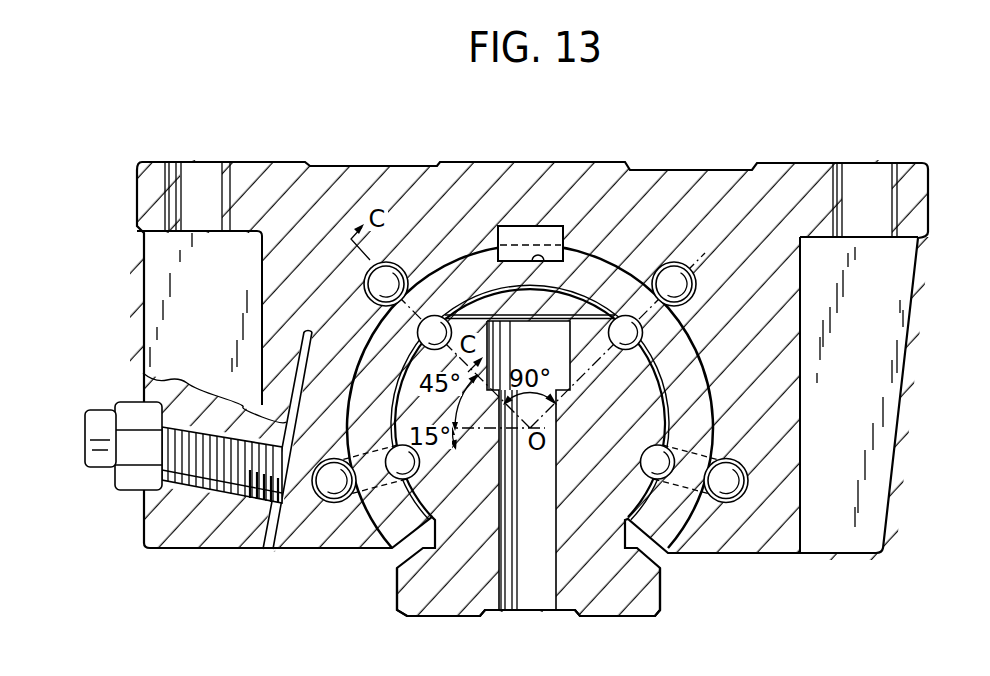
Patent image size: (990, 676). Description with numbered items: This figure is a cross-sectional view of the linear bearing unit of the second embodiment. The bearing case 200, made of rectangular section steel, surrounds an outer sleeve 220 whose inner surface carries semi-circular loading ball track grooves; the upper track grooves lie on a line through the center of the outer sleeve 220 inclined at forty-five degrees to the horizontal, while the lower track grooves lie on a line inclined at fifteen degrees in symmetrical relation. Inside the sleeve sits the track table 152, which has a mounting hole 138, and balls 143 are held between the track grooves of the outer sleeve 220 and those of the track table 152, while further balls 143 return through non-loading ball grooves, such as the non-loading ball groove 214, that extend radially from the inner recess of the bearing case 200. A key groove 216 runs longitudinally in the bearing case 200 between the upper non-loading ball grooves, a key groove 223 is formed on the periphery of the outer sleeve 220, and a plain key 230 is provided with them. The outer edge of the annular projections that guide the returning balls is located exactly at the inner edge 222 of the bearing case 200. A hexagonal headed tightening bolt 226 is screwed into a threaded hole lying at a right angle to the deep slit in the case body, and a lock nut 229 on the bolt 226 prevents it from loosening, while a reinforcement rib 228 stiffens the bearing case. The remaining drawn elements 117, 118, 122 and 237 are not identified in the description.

The bearing case 200 is at (778, 158).
The housing body 122 is at (707, 190).
The clamping bolt 117 is at (181, 163).
The clamping bolt 118 is at (893, 183).
The reinforcement rib 228 is at (150, 293).
The slit 237 is at (312, 328).
The hexagonal headed bolt 226 is at (108, 405).
The lock nut 229 is at (121, 478).
The outer sleeve 220 is at (600, 266).
The inner edge of the bearing case 222 is at (697, 343).
The non-loading ball groove 214 is at (680, 345).
The mounting hole 138 is at (500, 588).
The track table 152 is at (613, 600).
The key groove 216 is at (518, 228).
The plain key 230 is at (553, 227).
The key groove 223 is at (550, 262).
The balls 143 is at (378, 276).